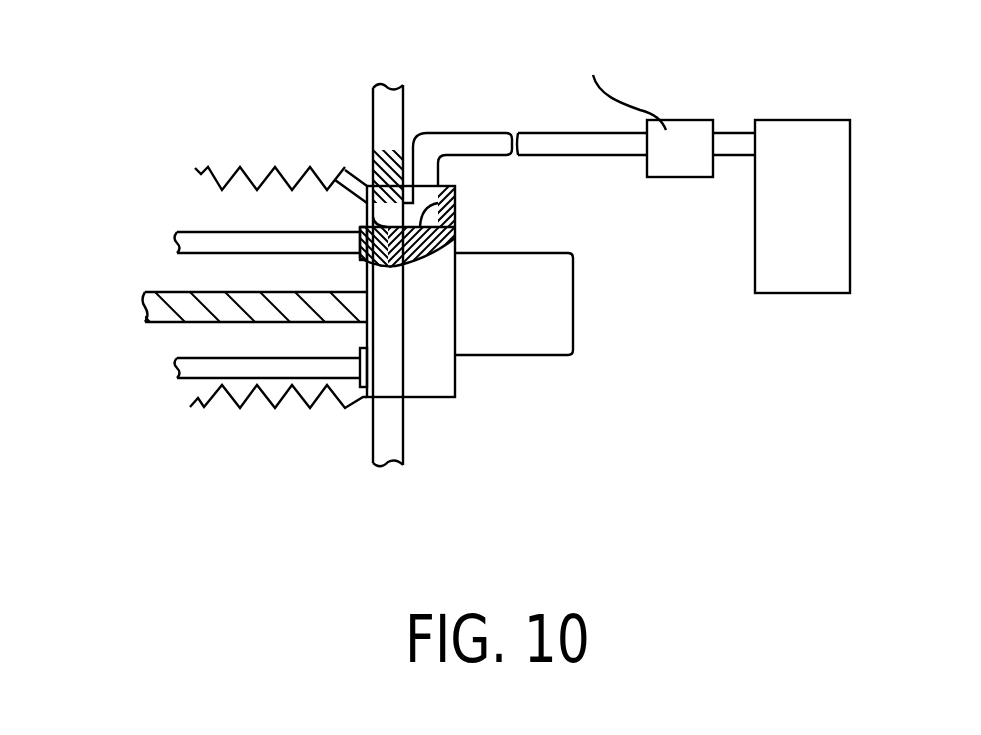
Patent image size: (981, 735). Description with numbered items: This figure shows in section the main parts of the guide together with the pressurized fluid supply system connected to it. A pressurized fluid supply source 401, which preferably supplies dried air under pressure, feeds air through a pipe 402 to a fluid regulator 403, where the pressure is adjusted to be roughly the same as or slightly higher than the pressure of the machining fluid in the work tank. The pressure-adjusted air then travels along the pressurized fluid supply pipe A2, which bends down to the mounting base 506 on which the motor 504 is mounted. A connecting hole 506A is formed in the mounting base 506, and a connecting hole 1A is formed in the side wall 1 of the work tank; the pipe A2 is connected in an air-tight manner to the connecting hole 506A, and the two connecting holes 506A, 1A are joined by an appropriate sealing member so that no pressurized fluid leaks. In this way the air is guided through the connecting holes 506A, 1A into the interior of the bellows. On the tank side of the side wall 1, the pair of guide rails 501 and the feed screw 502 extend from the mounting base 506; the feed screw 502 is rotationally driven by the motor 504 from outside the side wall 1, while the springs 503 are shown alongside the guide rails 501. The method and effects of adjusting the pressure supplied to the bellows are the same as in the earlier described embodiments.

The side wall 1 is at (383, 432).
The connecting hole 1A is at (335, 180).
The pressurized fluid supply pipe A2 is at (468, 130).
The pressurized fluid supply source 401 is at (825, 127).
The pipe 402 is at (728, 140).
The fluid regulator 403 is at (690, 128).
The guide rails 501 is at (198, 242).
The feed screw 502 is at (152, 305).
The spring 503 is at (245, 176).
The motor 504 is at (563, 328).
The mounting base 506 is at (422, 388).
The connecting hole 506A is at (445, 203).